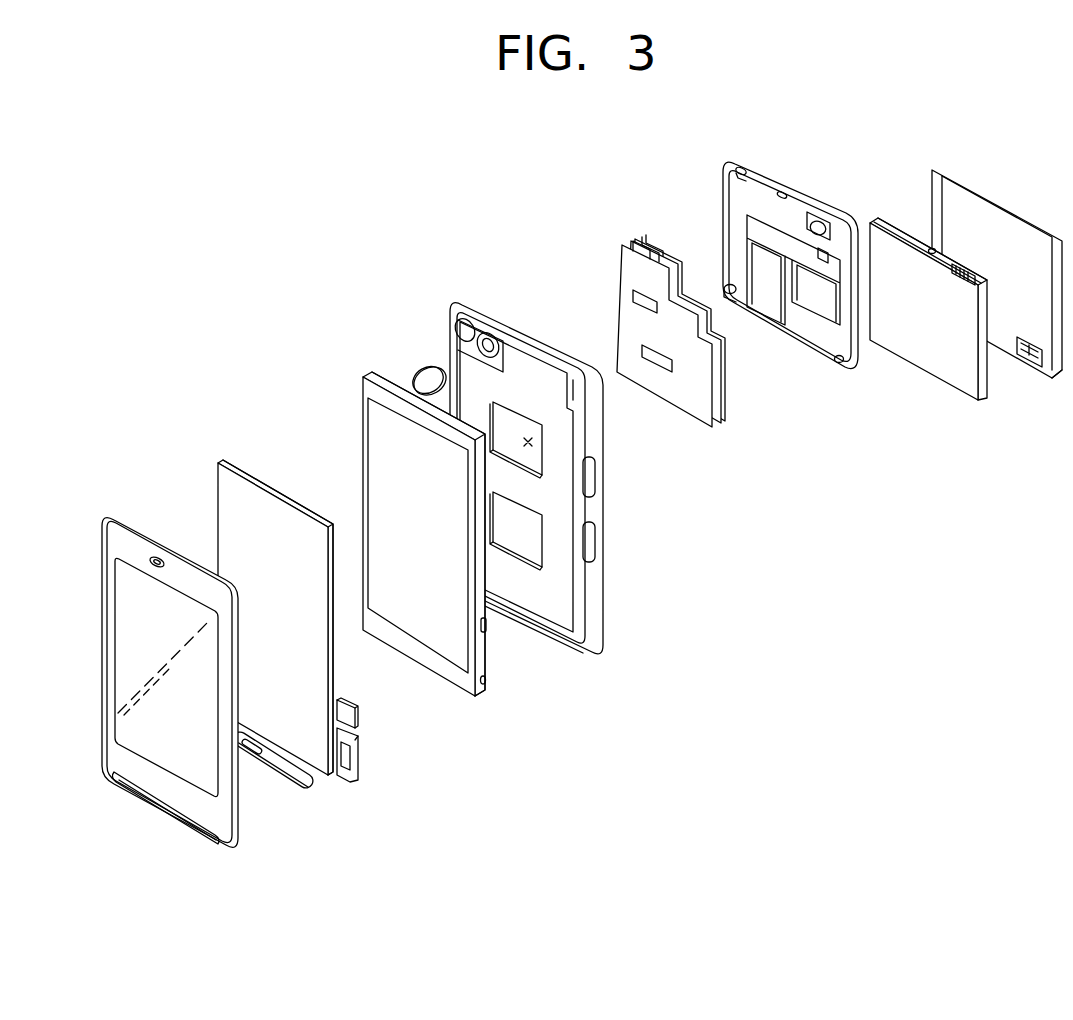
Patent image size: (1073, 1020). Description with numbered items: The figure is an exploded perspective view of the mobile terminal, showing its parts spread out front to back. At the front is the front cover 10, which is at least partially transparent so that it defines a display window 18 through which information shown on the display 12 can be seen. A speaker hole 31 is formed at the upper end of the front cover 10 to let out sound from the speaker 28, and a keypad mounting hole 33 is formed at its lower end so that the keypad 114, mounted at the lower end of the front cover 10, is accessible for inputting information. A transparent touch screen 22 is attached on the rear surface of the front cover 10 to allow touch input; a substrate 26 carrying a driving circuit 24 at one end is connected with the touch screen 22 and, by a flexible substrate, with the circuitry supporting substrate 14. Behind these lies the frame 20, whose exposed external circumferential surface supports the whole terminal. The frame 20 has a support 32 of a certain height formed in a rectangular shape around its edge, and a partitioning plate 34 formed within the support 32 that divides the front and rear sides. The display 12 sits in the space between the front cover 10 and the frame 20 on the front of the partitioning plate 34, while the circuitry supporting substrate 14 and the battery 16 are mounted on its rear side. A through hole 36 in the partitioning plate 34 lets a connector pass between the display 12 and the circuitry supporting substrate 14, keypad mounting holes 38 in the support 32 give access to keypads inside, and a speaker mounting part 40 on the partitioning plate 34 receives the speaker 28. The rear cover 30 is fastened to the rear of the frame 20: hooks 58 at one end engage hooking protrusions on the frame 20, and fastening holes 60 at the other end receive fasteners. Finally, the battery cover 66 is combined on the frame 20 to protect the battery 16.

The front cover 10 is at (135, 674).
The display 12 is at (458, 680).
The circuitry supporting substrate 14 is at (703, 393).
The battery 16 is at (950, 373).
The display window 18 is at (122, 640).
The frame 20 is at (527, 455).
The touch screen 22 is at (226, 498).
The driving circuit 24 is at (350, 770).
The substrate 26 is at (355, 716).
The speaker 28 is at (418, 373).
The rear cover 30 is at (764, 280).
The speaker hole 31 is at (157, 556).
The support 32 is at (594, 572).
The keypad mounting hole 33 is at (162, 802).
The partitioning plate 34 is at (553, 593).
The through hole 36 is at (530, 441).
The keypad mounting holes 38 is at (595, 541).
The speaker mounting part 40 is at (490, 340).
The hooks 58 is at (740, 173).
The fastening holes 60 is at (838, 364).
The battery cover 66 is at (1010, 226).
The keypad 114 is at (287, 777).